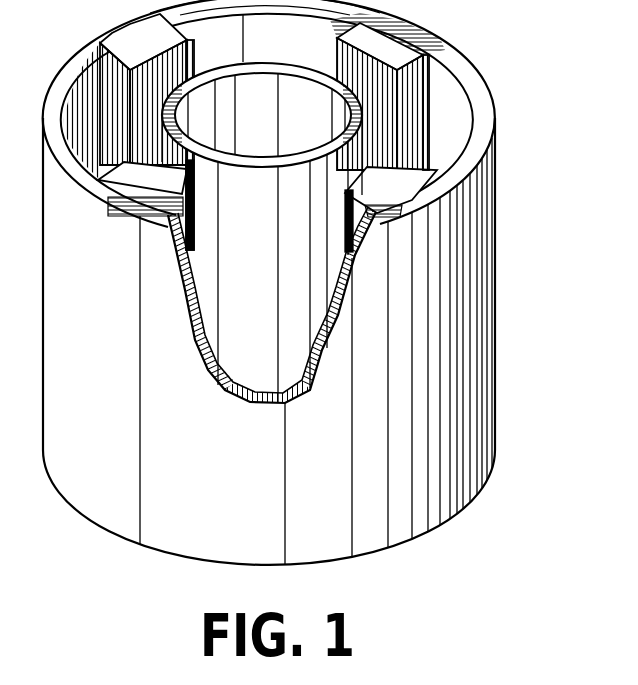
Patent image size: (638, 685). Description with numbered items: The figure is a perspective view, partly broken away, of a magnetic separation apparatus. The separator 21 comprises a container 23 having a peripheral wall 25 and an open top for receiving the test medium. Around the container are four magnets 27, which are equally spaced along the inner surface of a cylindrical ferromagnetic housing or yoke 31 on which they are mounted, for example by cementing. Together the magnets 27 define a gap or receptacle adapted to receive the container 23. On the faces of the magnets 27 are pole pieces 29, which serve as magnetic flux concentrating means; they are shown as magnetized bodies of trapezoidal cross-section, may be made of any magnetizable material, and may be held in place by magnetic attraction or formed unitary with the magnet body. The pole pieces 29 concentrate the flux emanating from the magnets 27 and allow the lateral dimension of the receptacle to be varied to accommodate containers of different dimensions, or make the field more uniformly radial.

The separator 21 is at (304, 282).
The container 23 is at (262, 232).
The peripheral wall 25 is at (258, 97).
The magnets 27 is at (346, 26).
The pole pieces 29 is at (186, 52).
The ferromagnetic housing or yoke 31 is at (494, 350).